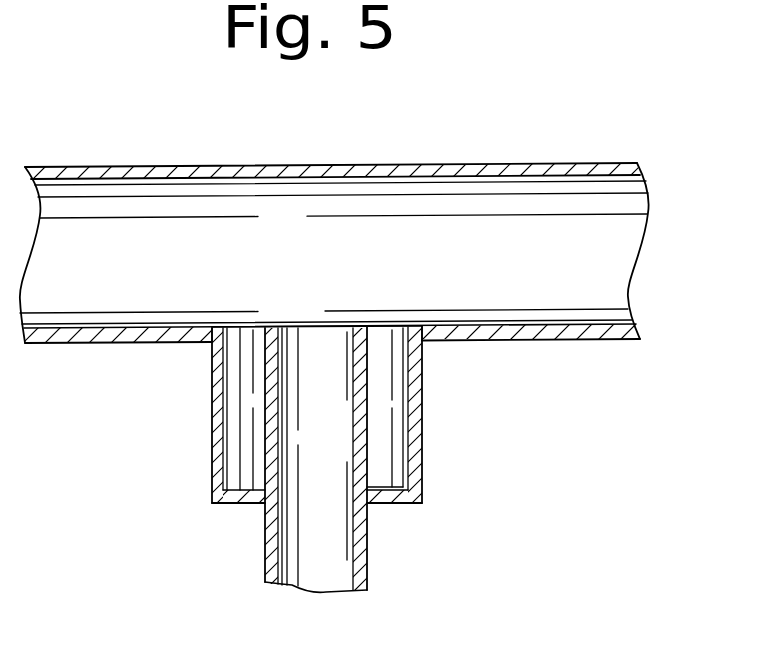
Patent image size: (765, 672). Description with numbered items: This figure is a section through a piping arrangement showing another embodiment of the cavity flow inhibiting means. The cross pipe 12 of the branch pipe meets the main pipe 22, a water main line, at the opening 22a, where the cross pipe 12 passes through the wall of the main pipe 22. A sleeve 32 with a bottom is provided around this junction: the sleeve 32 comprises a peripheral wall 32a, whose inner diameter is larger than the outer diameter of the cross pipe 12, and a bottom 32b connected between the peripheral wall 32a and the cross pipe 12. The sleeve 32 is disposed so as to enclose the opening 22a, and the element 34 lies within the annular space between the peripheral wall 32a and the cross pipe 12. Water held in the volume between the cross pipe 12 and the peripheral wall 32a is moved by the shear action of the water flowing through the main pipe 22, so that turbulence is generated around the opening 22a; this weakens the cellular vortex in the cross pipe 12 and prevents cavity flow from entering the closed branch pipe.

The main pipe 22 is at (518, 160).
The opening 22a is at (287, 333).
The sleeve 32 is at (327, 447).
The peripheral wall 32a is at (210, 372).
The bottom 32b is at (230, 503).
The sleeve 34 is at (380, 357).
The cross pipe 12 is at (370, 520).